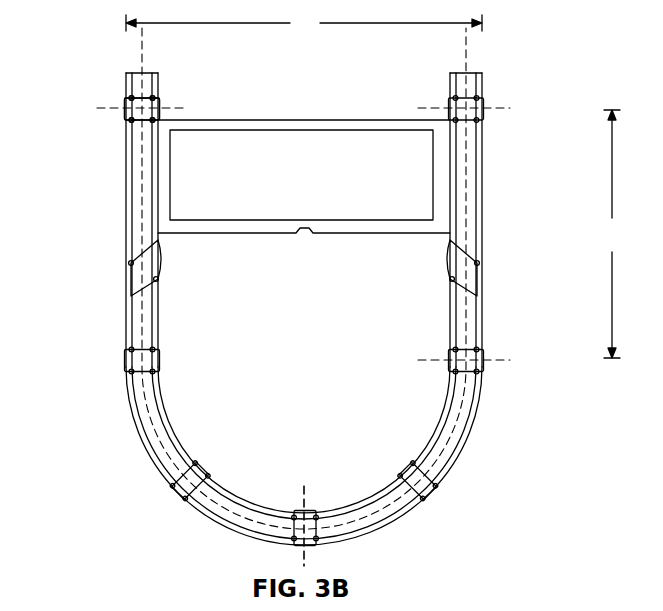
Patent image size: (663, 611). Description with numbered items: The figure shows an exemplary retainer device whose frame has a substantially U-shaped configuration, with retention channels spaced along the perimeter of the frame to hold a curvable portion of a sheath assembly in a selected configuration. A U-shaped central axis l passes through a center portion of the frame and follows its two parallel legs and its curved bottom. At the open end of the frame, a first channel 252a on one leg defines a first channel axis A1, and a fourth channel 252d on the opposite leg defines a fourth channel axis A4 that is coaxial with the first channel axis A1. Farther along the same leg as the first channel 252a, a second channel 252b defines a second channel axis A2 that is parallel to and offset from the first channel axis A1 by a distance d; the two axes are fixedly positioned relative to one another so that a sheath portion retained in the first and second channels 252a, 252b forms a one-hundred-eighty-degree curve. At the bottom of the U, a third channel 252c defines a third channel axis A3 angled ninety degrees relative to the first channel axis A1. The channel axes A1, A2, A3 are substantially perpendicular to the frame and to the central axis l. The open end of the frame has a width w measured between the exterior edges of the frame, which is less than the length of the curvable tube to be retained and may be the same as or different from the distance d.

The first channel 252a is at (483, 100).
The second channel 252b is at (483, 352).
The third channel 252c is at (300, 512).
The fourth channel 252d is at (126, 100).
The first channel axis A1 is at (490, 108).
The second channel axis A2 is at (490, 360).
The third channel axis A3 is at (310, 500).
The fourth channel axis A4 is at (112, 108).
The width w is at (304, 23).
The distance d is at (612, 234).
The central axis l is at (463, 61).